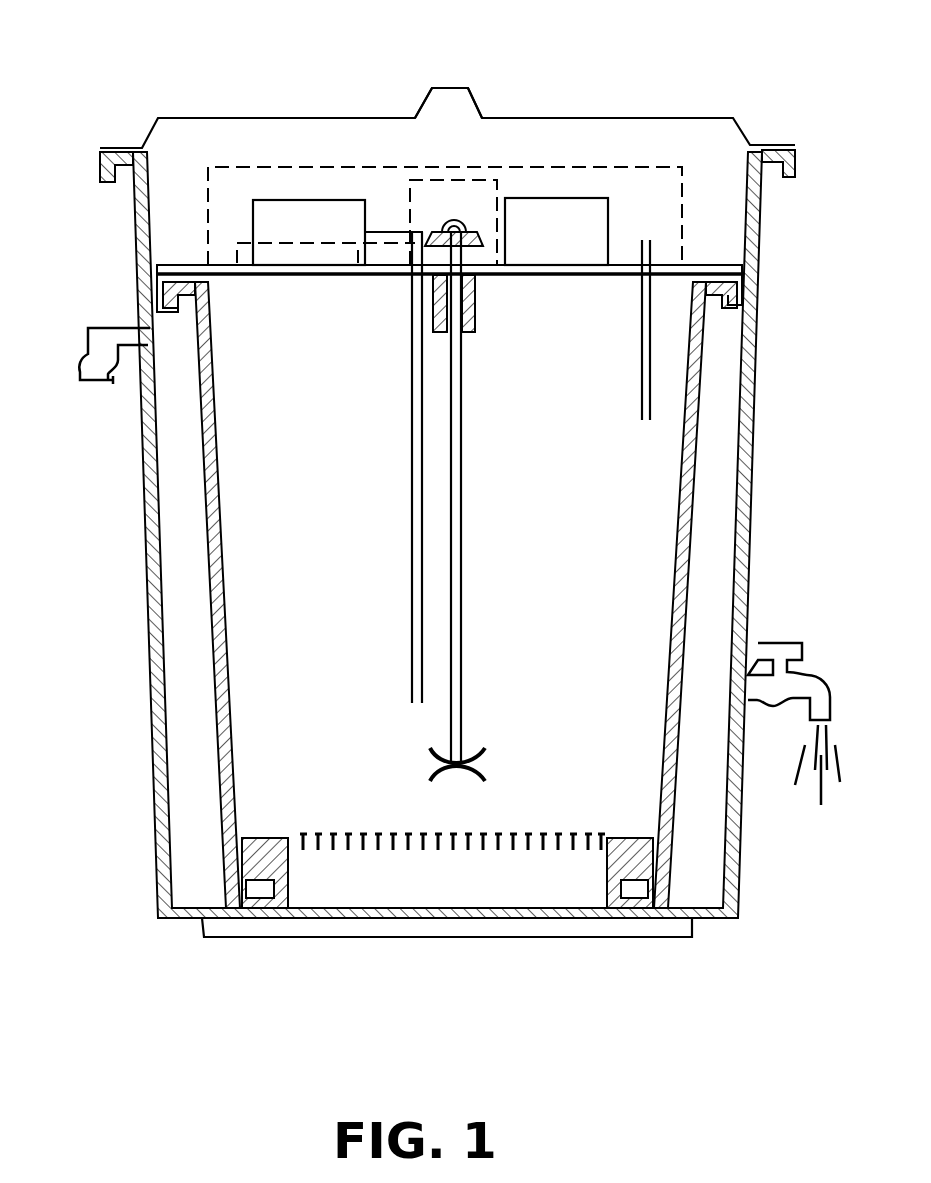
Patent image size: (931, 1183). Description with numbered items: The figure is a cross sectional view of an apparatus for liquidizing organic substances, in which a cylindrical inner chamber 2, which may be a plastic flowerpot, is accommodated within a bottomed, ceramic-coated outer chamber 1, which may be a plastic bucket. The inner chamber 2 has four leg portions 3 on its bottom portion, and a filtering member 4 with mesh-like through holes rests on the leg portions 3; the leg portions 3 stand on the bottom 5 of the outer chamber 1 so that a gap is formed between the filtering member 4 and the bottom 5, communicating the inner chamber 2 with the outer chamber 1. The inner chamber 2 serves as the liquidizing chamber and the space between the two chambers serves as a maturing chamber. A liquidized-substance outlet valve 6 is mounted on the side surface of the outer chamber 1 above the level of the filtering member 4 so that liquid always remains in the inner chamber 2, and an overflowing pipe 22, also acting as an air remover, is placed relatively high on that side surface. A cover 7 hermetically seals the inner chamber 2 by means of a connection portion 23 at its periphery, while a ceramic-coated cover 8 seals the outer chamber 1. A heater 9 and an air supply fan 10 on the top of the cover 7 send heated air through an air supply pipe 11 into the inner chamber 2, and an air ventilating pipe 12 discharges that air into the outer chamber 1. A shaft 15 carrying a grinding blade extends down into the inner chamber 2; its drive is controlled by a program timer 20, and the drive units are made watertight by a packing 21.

The outer chamber 1 is at (152, 740).
The inner chamber 2 is at (690, 545).
The leg portions 3 is at (623, 875).
The filtering member 4 is at (375, 852).
The bottom 5 is at (507, 918).
The liquidized-substance outlet valve 6 is at (780, 643).
The cover for the inner chamber 7 is at (665, 257).
The cover for the outer chamber 8 is at (478, 110).
The heater 9 is at (303, 215).
The air supply fan 10 is at (575, 222).
The air supply pipe 11 is at (411, 437).
The air ventilating pipe 12 is at (650, 347).
The shaft 15 is at (462, 508).
The program timer 20 is at (302, 250).
The packing 21 is at (550, 167).
The overflowing pipe 22 is at (97, 327).
The connection portion 23 is at (747, 335).